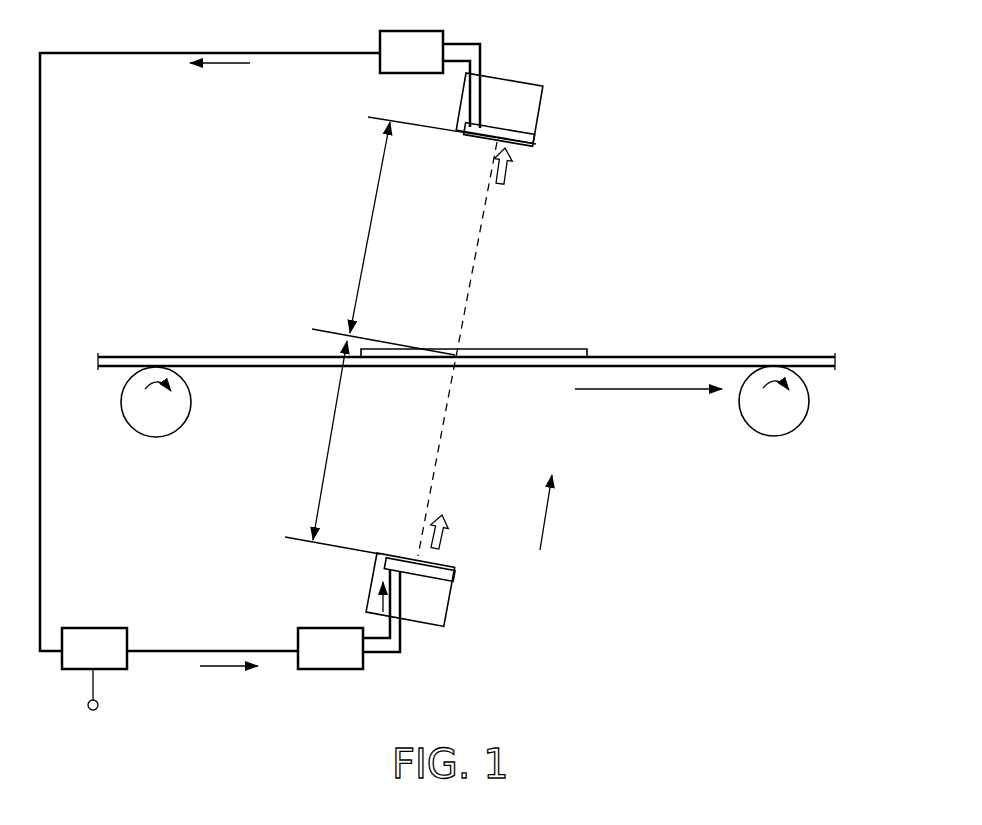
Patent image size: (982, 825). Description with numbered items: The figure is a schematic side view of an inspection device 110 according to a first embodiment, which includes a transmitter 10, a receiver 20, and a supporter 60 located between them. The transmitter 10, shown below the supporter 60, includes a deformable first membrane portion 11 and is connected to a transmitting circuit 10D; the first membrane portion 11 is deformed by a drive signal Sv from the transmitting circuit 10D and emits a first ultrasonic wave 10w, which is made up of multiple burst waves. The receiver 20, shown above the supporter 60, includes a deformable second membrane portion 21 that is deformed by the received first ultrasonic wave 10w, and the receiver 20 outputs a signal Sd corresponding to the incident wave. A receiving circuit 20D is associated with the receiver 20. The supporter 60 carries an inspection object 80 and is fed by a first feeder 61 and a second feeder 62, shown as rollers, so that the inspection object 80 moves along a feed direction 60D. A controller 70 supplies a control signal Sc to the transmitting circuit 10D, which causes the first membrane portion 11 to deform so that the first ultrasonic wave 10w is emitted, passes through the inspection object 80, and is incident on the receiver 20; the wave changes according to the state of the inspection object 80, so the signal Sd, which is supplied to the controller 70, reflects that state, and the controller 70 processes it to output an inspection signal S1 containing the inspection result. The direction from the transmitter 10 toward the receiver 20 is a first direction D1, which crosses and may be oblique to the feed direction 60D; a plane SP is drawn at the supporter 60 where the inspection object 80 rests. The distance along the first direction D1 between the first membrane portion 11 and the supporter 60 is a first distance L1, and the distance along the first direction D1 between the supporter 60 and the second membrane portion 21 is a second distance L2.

The inspection device 110 is at (823, 127).
The transmitter 10 is at (453, 600).
The first membrane portion 11 is at (456, 570).
The transmitting circuit 10D is at (364, 668).
The first ultrasonic wave 10w is at (512, 167).
The receiver 20 is at (543, 108).
The second membrane portion 21 is at (533, 145).
The receiving circuit 20D is at (443, 36).
The supporter 60 is at (675, 357).
The feed direction 60D is at (615, 391).
The first feeder 61 is at (123, 413).
The second feeder 62 is at (806, 412).
The controller 70 is at (83, 628).
The inspection object 80 is at (583, 349).
The first distance L1 is at (313, 440).
The second distance L2 is at (353, 227).
The recording plane SP is at (480, 332).
The first direction D1 is at (543, 536).
The signal Sd is at (228, 66).
The control signal Sc is at (237, 670).
The drive signal Sv is at (380, 597).
The inspection signal S1 is at (98, 706).